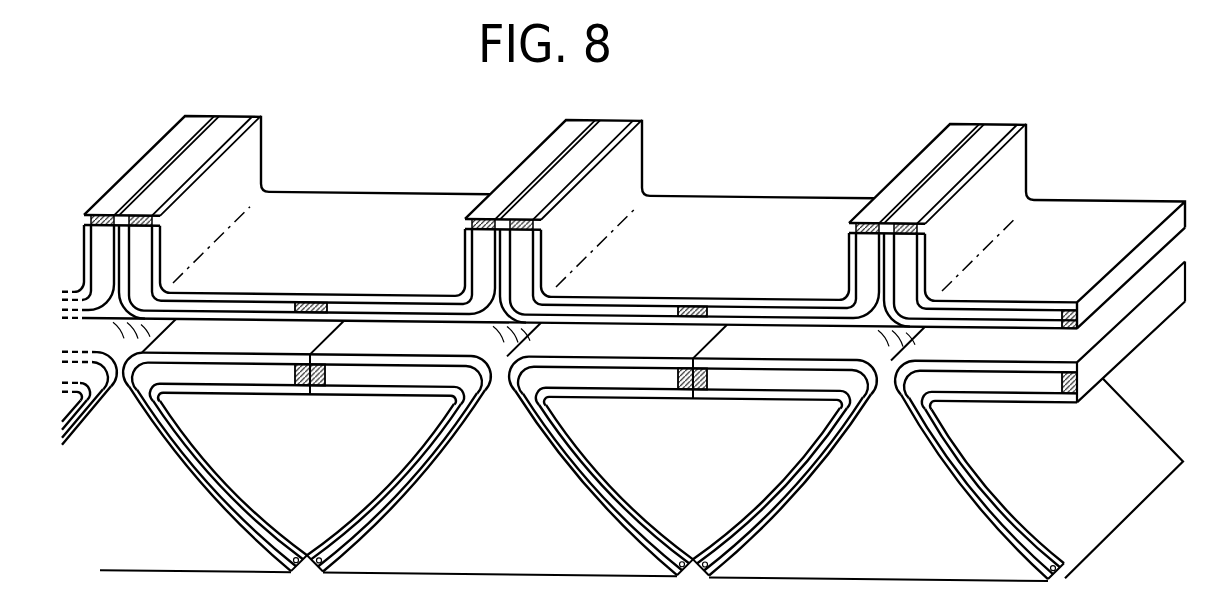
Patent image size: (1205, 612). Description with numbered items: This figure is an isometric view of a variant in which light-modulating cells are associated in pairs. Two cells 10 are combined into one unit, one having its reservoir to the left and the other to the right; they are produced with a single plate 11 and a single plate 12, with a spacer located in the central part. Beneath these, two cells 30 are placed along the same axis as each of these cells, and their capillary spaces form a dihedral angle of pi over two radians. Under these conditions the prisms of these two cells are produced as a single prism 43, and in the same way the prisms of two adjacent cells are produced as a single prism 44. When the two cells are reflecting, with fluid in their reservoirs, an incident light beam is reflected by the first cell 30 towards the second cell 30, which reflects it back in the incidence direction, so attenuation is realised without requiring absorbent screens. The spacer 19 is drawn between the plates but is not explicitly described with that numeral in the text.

The cell 10 is at (342, 212).
The plate 11 is at (388, 293).
The plate 12 is at (242, 322).
The spacer 19 is at (311, 300).
The cell 30 is at (202, 487).
The single prism 43 is at (290, 498).
The single prism 44 is at (571, 562).